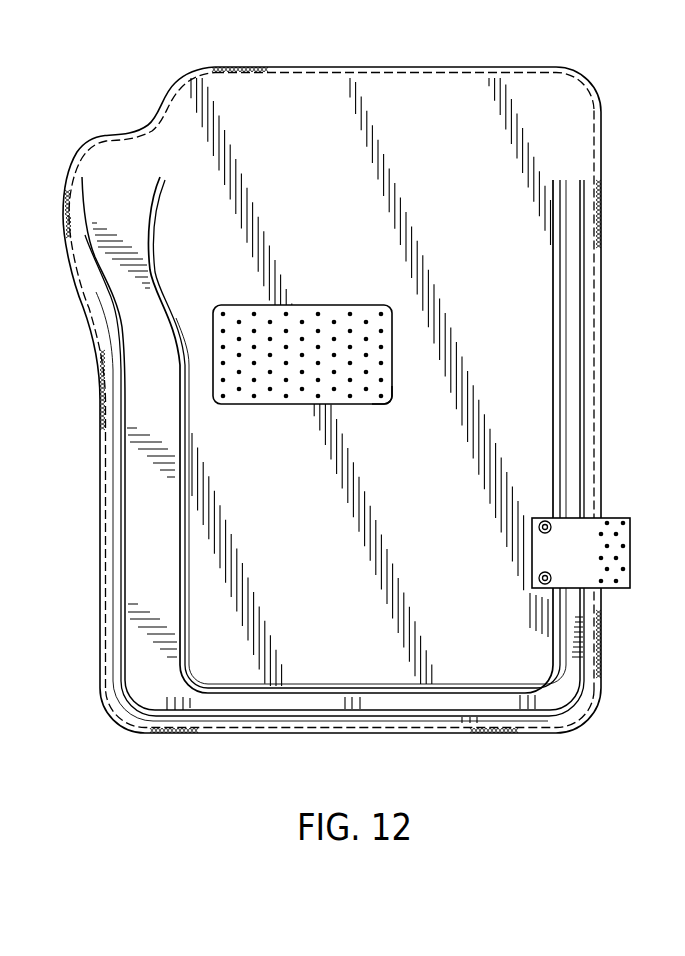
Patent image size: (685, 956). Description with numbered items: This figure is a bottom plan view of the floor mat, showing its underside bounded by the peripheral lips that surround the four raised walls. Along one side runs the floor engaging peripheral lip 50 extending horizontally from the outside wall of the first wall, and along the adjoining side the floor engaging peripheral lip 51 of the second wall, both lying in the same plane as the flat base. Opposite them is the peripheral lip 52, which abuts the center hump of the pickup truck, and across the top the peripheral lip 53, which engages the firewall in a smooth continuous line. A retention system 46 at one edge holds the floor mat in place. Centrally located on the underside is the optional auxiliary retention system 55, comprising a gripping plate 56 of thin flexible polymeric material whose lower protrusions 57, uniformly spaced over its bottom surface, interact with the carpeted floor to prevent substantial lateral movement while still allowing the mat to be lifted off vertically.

The retention system 46 is at (627, 596).
The floor engaging peripheral lip 50 is at (603, 496).
The floor engaging peripheral lip 51 is at (233, 734).
The peripheral lip 52 is at (98, 604).
The peripheral lip 53 is at (380, 66).
The auxiliary retention system 55 is at (362, 308).
The gripping plate 56 is at (373, 401).
The lower protrusions 57 is at (255, 400).